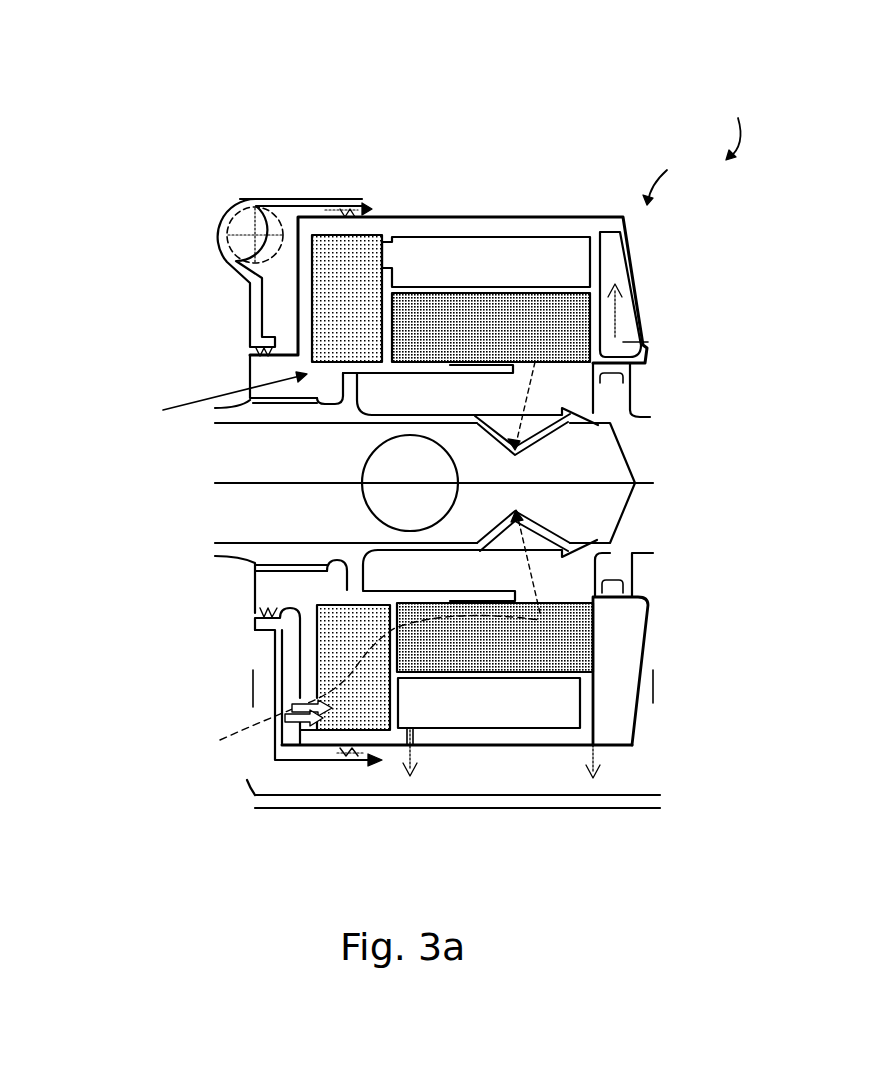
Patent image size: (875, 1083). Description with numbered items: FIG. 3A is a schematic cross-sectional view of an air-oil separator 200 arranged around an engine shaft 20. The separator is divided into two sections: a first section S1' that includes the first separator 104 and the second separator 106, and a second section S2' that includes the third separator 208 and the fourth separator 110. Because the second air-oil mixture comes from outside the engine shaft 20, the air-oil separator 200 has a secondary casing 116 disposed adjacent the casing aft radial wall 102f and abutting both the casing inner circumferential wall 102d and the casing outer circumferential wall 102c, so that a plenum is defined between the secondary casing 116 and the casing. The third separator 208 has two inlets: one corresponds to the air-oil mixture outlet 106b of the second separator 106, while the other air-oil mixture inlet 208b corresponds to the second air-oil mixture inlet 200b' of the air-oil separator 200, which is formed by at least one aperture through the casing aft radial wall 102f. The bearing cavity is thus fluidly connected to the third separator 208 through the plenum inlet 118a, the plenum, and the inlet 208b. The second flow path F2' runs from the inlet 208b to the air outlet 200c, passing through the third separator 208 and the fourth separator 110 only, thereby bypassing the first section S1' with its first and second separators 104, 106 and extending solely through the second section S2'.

The secondary casing 116 is at (305, 202).
The plenum inlet 118a is at (263, 228).
The second separator 106 is at (519, 246).
The air-oil mixture outlet 106b is at (392, 254).
The third separator 208 is at (355, 279).
The fourth separator 110 is at (466, 332).
The first separator 104 is at (638, 268).
The first section S1' is at (673, 172).
The air-oil separator 200 is at (731, 126).
The casing inner circumferential wall 102d is at (258, 367).
The second section S2' is at (207, 401).
The engine shaft 20 is at (645, 437).
The air outlet 200c is at (560, 368).
The second flow path F2' is at (652, 561).
The casing outer circumferential wall 102c is at (513, 737).
The casing aft radial wall 102f is at (310, 642).
The air-oil mixture inlet 208b is at (300, 712).
The second air-oil mixture inlet 200b' is at (247, 800).